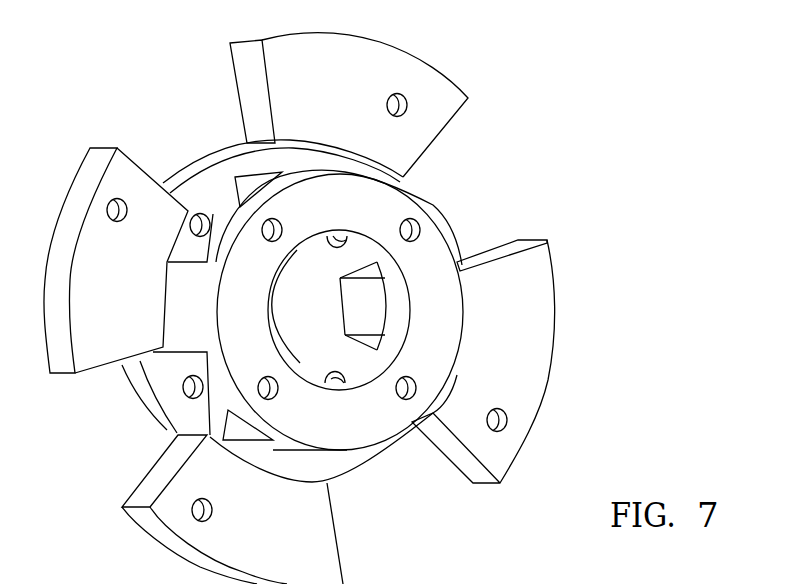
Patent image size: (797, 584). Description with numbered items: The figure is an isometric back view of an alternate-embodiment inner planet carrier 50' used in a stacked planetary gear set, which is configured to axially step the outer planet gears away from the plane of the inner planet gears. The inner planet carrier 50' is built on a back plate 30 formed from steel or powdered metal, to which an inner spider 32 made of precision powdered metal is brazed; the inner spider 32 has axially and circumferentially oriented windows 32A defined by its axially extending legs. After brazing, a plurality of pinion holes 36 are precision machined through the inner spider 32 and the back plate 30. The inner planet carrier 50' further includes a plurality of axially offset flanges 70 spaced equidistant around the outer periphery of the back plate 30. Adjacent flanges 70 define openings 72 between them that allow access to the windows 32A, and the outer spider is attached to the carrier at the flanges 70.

The back plate 30 is at (357, 458).
The inner spider 32 is at (435, 250).
The windows 32A is at (218, 211).
The pinion holes 36 is at (403, 382).
The inner planet carrier 50' is at (349, 308).
The axially offset flanges 70 is at (557, 308).
The openings 72 is at (479, 184).